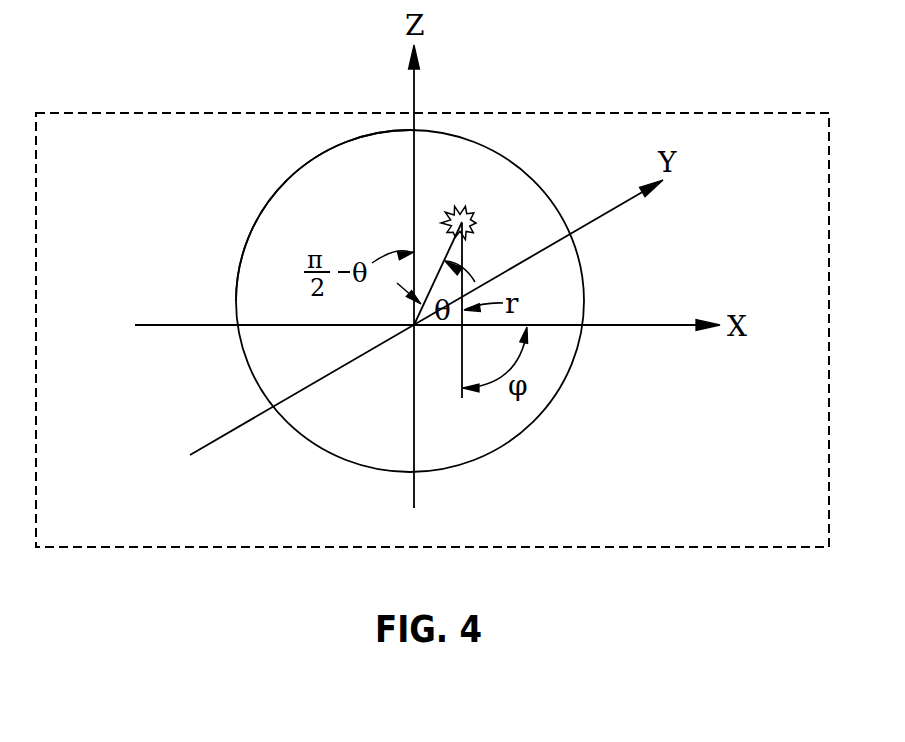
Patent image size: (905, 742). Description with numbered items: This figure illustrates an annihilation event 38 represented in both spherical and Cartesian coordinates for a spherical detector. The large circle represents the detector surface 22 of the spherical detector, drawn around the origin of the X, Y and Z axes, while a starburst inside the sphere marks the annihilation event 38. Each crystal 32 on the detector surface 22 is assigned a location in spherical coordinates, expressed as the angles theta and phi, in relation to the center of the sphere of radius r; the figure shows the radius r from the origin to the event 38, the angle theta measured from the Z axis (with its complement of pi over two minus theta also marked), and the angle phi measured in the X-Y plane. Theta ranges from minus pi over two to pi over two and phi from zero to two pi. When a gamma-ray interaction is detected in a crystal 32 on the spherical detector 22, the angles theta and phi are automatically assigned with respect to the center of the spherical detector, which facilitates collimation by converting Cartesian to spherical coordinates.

The detector surface 22 is at (537, 420).
The crystal 32 is at (285, 178).
The event 38 is at (470, 210).